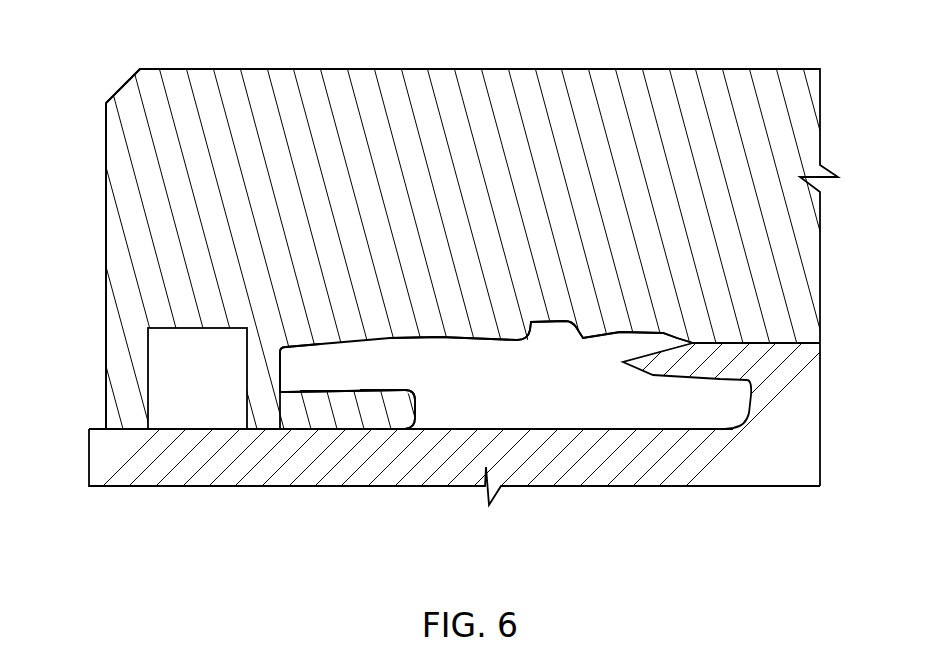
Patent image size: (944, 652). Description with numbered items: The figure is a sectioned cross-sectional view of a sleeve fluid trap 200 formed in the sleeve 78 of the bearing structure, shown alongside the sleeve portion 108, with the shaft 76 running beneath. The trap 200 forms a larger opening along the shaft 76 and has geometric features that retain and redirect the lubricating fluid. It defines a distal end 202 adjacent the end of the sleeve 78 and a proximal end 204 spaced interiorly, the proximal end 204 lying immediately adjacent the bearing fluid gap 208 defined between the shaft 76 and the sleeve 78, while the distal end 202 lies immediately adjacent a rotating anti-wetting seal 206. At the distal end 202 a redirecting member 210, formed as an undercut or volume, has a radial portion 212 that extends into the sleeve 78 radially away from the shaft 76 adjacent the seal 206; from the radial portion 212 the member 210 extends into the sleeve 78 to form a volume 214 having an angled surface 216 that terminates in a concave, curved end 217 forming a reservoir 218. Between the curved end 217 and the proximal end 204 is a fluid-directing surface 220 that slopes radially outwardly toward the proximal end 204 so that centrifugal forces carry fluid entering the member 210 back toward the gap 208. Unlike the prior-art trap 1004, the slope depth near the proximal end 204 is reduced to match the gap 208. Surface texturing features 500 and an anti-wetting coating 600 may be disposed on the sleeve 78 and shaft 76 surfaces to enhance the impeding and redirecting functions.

The shaft 76 is at (822, 398).
The sleeve 78 is at (116, 80).
The sleeve portion 108 is at (122, 183).
The trap 1004 is at (147, 378).
The trap 200 is at (388, 316).
The distal end 202 is at (270, 340).
The proximal end 204 is at (669, 318).
The rotating anti-wetting seal 206 is at (272, 406).
The bearing fluid gap 208 is at (786, 342).
The redirecting member 210 is at (279, 441).
The radial portion 212 is at (347, 437).
The volume 214 is at (317, 376).
The angled surface 216 is at (316, 405).
The concave, curved end 217 is at (252, 435).
The reservoir 218 is at (298, 368).
The fluid-directing surface 220 is at (447, 340).
The surface texturing features 500 is at (510, 435).
The anti-wetting coating 600 is at (567, 425).